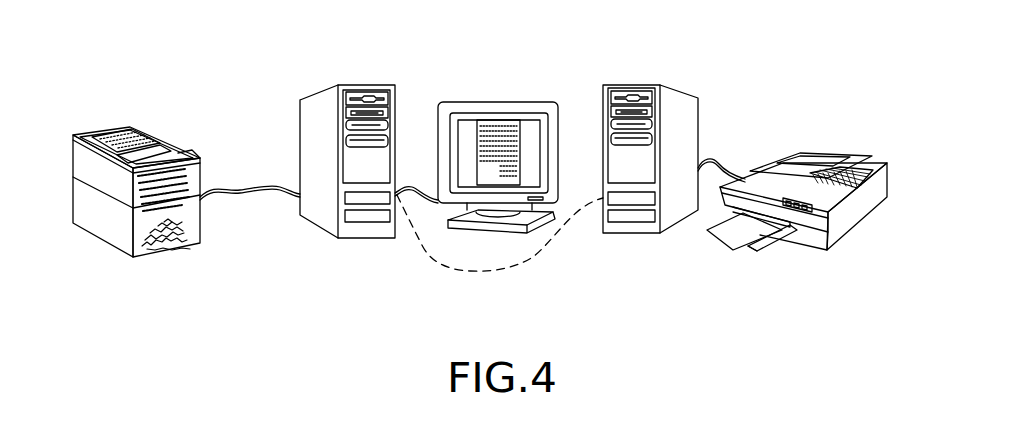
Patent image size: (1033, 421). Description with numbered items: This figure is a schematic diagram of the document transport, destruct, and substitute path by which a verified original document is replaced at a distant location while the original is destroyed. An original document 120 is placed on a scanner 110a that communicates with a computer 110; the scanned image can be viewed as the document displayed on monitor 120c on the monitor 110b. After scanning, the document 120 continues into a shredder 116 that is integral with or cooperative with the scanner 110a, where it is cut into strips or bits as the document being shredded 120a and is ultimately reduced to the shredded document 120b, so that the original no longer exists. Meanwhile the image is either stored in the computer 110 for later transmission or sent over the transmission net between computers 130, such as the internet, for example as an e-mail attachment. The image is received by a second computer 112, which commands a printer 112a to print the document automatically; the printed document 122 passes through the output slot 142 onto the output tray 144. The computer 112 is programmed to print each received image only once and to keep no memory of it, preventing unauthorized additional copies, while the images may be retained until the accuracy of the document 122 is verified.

The computer 110 is at (303, 93).
The scanner 110a is at (102, 130).
The monitor 110b is at (462, 102).
The computer 112 is at (677, 90).
The printer 112a is at (827, 152).
The shredder 116 is at (192, 152).
The document 120 is at (128, 133).
The document being shredded 120a is at (187, 180).
The shredded document 120b is at (197, 230).
The document displayed on monitor 120c is at (512, 128).
The document 122 is at (715, 242).
The transmission net between computers 130 is at (523, 265).
The output slot 142 is at (783, 233).
The output tray 144 is at (767, 247).